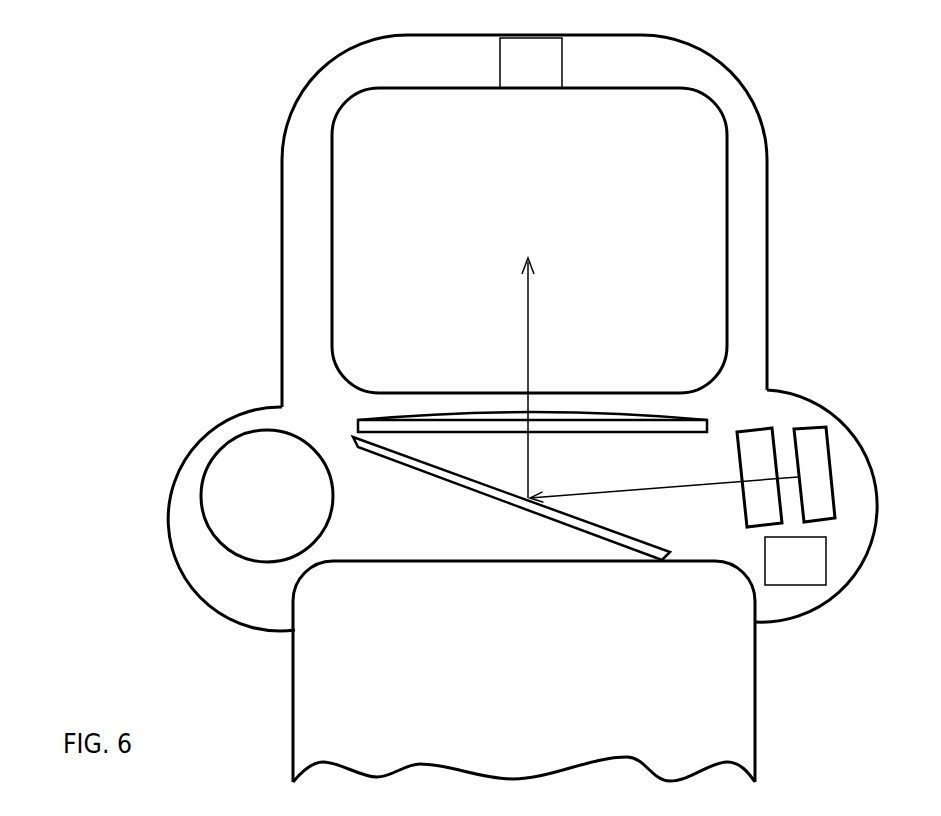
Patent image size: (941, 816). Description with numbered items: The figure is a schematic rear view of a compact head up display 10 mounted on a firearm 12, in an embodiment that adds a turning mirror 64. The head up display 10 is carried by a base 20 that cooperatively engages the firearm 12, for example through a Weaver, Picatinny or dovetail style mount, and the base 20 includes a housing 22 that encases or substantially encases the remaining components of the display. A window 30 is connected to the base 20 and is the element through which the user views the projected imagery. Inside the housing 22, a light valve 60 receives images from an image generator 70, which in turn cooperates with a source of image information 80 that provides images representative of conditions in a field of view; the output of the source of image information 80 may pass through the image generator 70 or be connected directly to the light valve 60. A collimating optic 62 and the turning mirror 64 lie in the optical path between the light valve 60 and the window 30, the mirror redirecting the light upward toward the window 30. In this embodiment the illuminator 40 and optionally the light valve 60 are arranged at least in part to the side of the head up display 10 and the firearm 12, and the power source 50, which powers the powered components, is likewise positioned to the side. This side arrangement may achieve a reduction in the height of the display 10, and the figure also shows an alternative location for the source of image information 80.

The head up display 10 is at (786, 121).
The firearm 12 is at (760, 730).
The base 20 is at (223, 570).
The housing 22 is at (767, 280).
The window 30 is at (520, 353).
The illuminator 40 is at (806, 436).
The power source 50 is at (267, 496).
The light valve 60 is at (752, 430).
The collimating optic 62 is at (614, 413).
The turning mirror 64 is at (445, 477).
The image generator 70 is at (795, 561).
The source of image information 80 is at (531, 63).